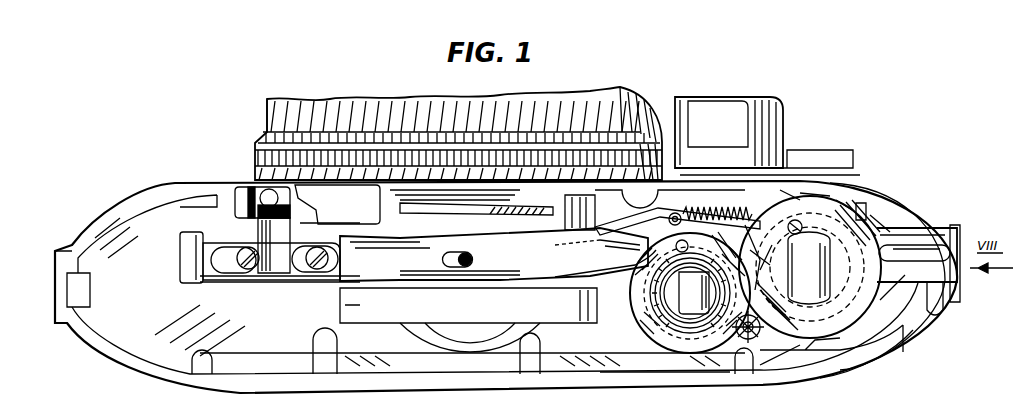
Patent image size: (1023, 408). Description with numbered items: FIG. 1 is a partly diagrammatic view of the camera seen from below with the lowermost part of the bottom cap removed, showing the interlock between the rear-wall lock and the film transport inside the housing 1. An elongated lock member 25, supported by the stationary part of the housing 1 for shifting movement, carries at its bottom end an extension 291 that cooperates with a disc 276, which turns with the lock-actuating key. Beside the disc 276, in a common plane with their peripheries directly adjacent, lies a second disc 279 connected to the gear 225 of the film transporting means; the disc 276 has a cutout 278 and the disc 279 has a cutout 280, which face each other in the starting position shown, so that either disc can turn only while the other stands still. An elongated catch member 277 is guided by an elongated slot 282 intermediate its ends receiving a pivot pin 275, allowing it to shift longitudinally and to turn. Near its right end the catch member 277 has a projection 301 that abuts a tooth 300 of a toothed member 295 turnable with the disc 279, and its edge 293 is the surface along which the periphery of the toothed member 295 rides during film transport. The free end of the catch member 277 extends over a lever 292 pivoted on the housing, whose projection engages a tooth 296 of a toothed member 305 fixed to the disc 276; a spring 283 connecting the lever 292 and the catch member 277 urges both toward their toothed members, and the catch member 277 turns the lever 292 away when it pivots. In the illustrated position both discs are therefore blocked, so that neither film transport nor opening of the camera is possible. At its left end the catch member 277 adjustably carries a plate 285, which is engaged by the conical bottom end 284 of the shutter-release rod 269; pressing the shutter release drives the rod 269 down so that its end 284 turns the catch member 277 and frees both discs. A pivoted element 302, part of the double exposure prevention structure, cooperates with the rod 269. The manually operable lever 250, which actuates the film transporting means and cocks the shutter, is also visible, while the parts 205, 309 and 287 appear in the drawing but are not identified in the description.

The housing 1 is at (158, 198).
The knurled adjusting knob 205 is at (270, 119).
The manually operable lever 250 is at (779, 98).
The elongated rod 269 is at (244, 190).
The conical bottom end 284 is at (337, 204).
The element 302 is at (186, 258).
The plate 285 is at (271, 282).
The elongated catch member 277 is at (400, 282).
The edge of catch member 293 is at (578, 295).
The elongated slot 282 is at (450, 252).
The pivot pin 275 is at (474, 261).
The projection 301 is at (657, 238).
The tooth 300 is at (677, 224).
The spring 283 is at (724, 208).
The top plate 309 is at (742, 205).
The second disc 279 is at (645, 315).
The gear 225 is at (652, 341).
The toothed member 295 is at (673, 378).
The cutout 278 is at (810, 267).
The cutout 280 is at (809, 268).
The tooth 296 is at (806, 216).
The lever 292 is at (870, 176).
The extension 291 is at (933, 229).
The lock member 25 is at (955, 303).
The end plate 287 is at (935, 322).
The disc 276 is at (882, 354).
The toothed member 305 is at (838, 377).